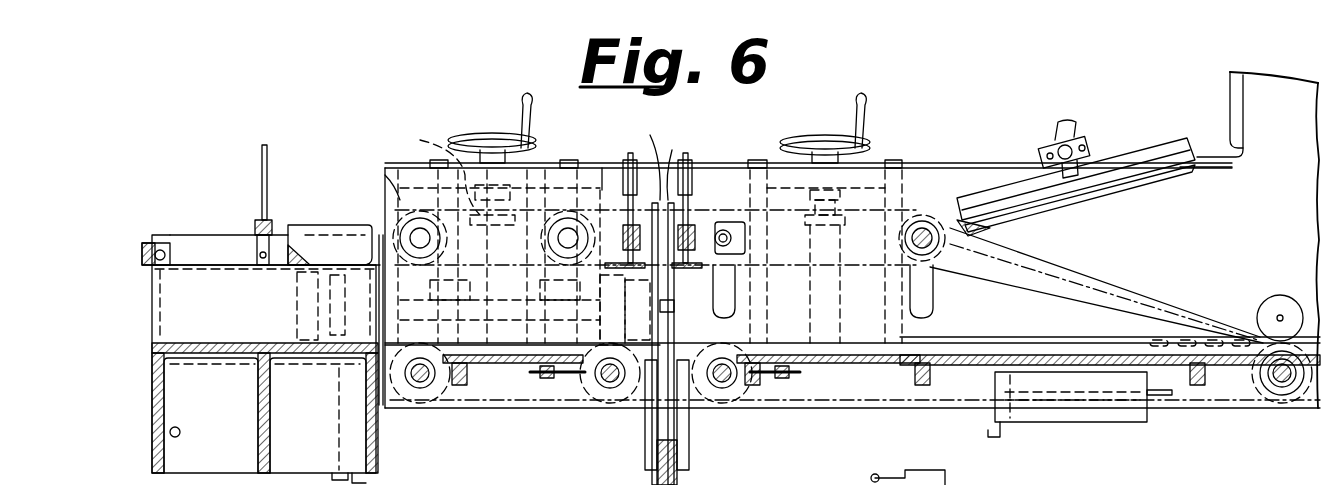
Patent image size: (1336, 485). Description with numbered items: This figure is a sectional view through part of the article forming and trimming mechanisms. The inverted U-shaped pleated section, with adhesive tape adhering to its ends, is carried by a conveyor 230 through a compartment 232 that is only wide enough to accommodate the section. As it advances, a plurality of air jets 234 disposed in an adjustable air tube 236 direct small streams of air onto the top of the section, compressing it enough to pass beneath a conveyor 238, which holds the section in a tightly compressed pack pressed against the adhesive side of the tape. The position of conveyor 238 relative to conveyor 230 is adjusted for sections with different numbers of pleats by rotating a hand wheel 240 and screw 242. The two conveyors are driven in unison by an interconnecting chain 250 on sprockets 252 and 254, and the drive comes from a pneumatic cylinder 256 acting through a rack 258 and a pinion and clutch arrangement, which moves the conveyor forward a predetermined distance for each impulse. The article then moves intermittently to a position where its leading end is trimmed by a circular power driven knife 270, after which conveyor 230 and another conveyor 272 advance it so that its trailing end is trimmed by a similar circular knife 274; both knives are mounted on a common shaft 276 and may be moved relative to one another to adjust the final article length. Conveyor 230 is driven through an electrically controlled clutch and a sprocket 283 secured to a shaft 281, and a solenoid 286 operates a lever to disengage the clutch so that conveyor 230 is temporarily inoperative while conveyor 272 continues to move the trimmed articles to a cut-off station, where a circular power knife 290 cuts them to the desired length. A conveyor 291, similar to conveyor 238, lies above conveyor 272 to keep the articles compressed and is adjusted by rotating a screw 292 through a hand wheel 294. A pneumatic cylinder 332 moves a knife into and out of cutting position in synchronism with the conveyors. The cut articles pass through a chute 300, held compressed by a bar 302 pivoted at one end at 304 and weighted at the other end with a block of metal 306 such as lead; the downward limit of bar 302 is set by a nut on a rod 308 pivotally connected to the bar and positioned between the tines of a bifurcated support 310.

The conveyor 230 is at (1146, 348).
The compartment 232 is at (990, 326).
The air jets 234 is at (1020, 216).
The adjustable air tube 236 is at (1015, 190).
The conveyor 238 is at (870, 262).
The hand wheel 240 is at (805, 138).
The screw 242 is at (820, 297).
The interconnecting chain 250 is at (1128, 268).
The sprocket 252 is at (948, 246).
The sprocket 254 is at (1280, 306).
The pneumatic cylinder 256 is at (1075, 412).
The rack 258 is at (1165, 398).
The circular power driven knife 270 is at (685, 195).
The conveyor 272 is at (522, 400).
The circular power driven knife 274 is at (631, 194).
The common shaft 276 is at (680, 314).
The shaft 281 is at (1288, 388).
The sprocket 283 is at (1310, 380).
The solenoid 286 is at (946, 479).
The circular power knife 290 is at (378, 232).
The conveyor 291 is at (385, 176).
The screw 292 is at (440, 150).
The hand wheel 294 is at (472, 135).
The chute 300 is at (256, 324).
The bar 302 is at (212, 262).
The pivot 304 is at (162, 250).
The block of metal 306 is at (308, 240).
The rod 308 is at (262, 165).
The bifurcated support 310 is at (258, 242).
The pneumatic cylinder 332 is at (340, 424).